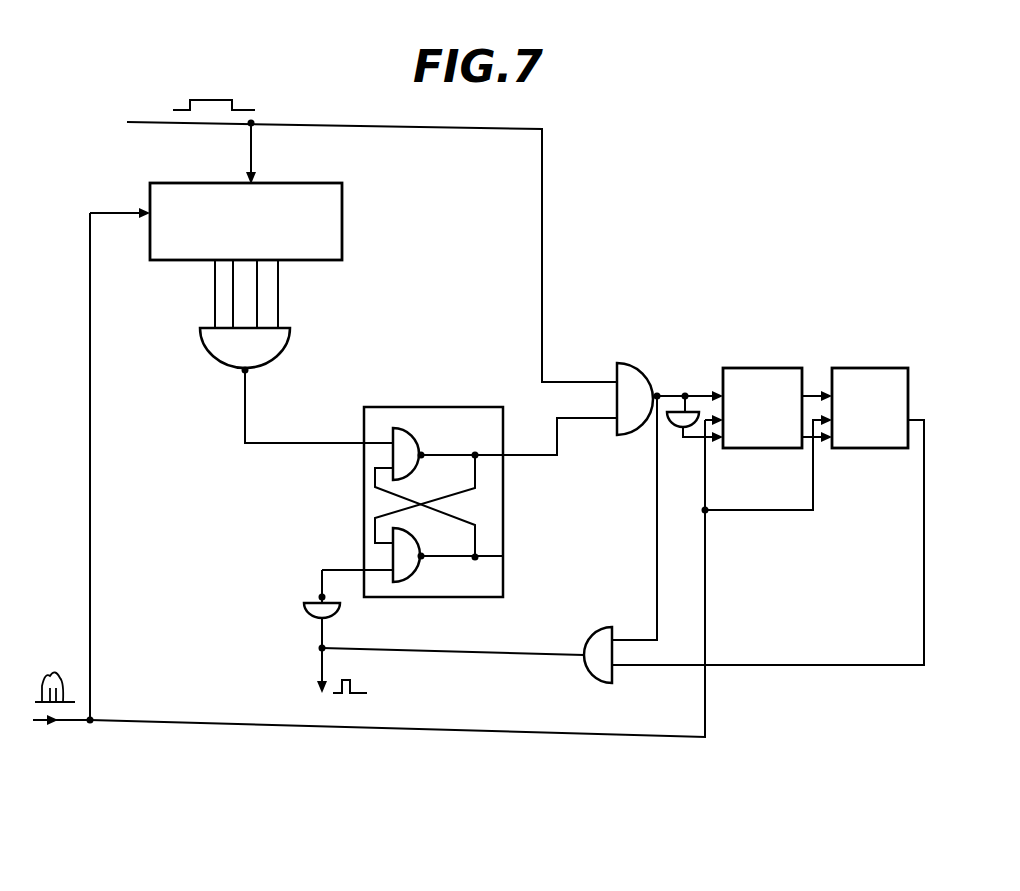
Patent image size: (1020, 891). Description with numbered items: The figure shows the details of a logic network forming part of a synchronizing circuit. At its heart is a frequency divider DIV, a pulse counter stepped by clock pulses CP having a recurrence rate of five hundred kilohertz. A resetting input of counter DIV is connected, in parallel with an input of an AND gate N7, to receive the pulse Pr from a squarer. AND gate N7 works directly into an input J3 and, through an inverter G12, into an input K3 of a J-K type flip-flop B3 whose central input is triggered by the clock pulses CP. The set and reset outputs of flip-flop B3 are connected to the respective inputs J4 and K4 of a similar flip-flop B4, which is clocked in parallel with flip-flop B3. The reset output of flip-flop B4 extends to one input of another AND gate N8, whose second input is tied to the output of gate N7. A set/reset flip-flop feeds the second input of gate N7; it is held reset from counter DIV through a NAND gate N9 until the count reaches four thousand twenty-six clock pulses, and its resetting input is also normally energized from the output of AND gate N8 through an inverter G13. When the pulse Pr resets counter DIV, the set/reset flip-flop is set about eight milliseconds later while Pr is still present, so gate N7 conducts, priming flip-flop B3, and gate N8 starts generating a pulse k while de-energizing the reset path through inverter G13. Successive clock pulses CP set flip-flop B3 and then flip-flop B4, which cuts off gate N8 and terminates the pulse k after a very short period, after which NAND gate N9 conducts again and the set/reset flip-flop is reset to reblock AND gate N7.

The pulse Pr is at (214, 92).
The frequency divider DIV is at (343, 222).
The NAND gate N9 is at (291, 343).
The AND gate N7 is at (652, 338).
The AND gate N8 is at (588, 678).
The inverter G12 is at (680, 430).
The inverter G13 is at (303, 612).
The flip-flop B3 is at (767, 368).
The flip-flop B4 is at (893, 368).
The input J3 is at (722, 381).
The input K3 is at (721, 449).
The input J4 is at (827, 374).
The input K4 is at (826, 451).
The pulse k is at (351, 678).
The clock pulses CP is at (58, 676).